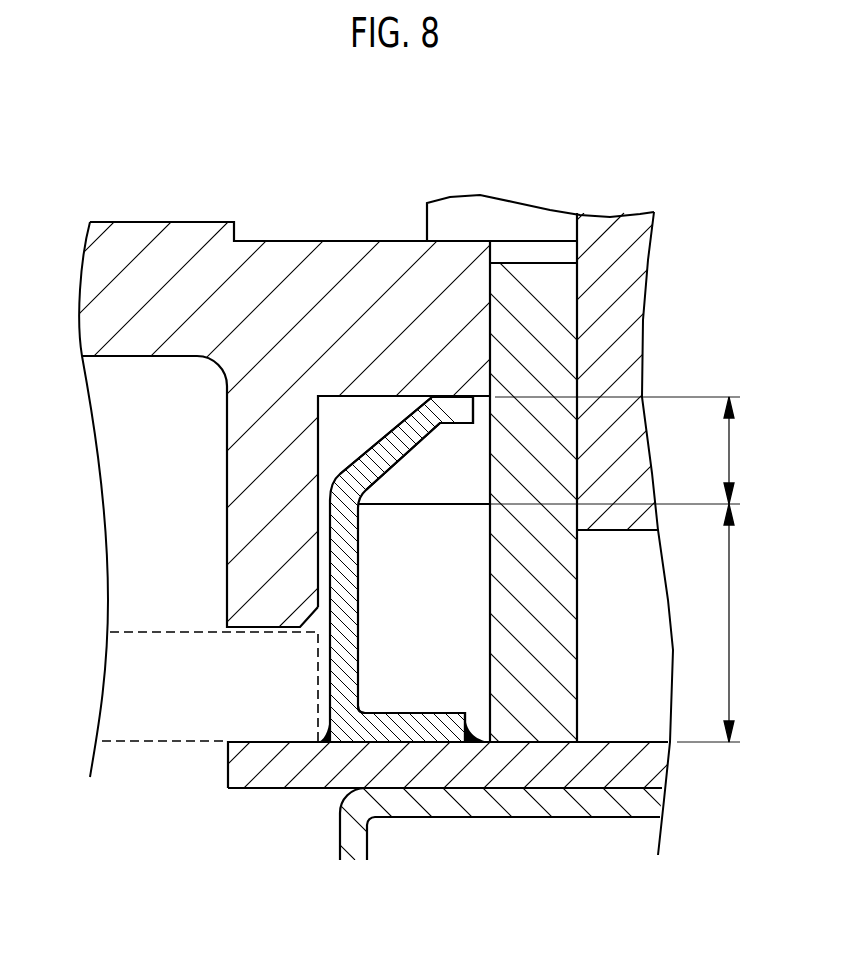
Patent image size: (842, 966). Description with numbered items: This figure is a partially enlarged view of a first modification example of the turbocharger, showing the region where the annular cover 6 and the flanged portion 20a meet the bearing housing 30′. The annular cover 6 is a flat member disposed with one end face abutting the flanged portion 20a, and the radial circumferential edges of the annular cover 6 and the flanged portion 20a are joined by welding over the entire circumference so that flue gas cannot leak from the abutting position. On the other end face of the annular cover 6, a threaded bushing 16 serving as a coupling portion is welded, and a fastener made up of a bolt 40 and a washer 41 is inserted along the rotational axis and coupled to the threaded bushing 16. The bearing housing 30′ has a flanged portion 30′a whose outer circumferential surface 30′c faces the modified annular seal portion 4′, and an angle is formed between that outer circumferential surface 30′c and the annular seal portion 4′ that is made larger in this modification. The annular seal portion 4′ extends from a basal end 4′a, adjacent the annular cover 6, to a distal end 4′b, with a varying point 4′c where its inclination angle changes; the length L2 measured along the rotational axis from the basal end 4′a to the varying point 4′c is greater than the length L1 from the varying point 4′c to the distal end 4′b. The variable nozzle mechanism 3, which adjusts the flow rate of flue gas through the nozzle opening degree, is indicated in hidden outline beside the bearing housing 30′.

The bearing housing 30′ is at (180, 238).
The flanged portion of the bearing housing 30′a is at (375, 308).
The outer circumferential surface of the flanged portion 30′c is at (333, 398).
The washer 41 is at (437, 222).
The bolt 40 is at (636, 342).
The threaded bushing 16 is at (577, 643).
The annular seal portion 4′ is at (360, 617).
The basal end 4′a is at (360, 692).
The distal end 4′b is at (447, 425).
The varying point 4′c is at (372, 507).
The variable nozzle mechanism 3 is at (157, 632).
The annular cover 6 is at (656, 756).
The flanged portion 20a is at (660, 801).
The length from the varying point to the distal end L1 is at (626, 450).
The length from the basal end to the varying point L2 is at (722, 623).